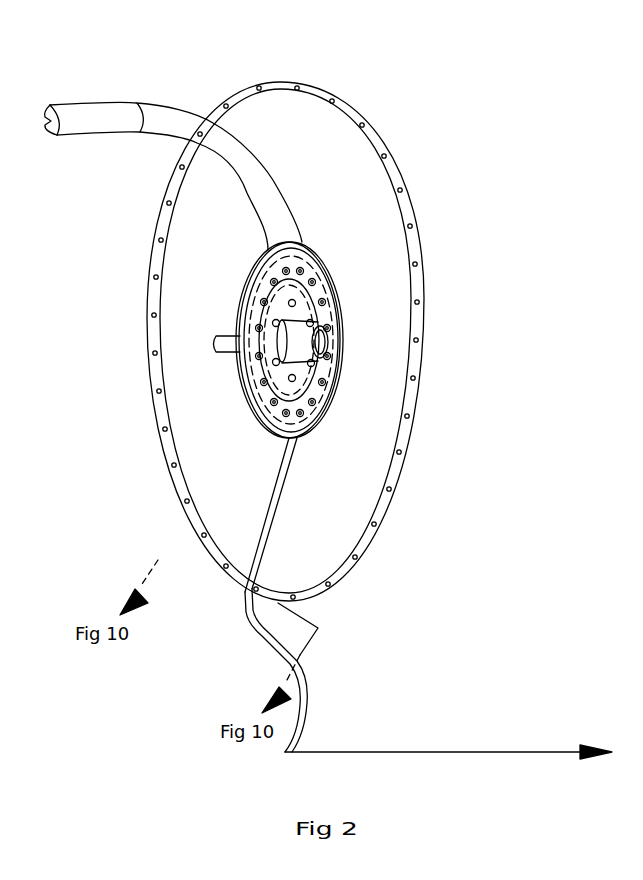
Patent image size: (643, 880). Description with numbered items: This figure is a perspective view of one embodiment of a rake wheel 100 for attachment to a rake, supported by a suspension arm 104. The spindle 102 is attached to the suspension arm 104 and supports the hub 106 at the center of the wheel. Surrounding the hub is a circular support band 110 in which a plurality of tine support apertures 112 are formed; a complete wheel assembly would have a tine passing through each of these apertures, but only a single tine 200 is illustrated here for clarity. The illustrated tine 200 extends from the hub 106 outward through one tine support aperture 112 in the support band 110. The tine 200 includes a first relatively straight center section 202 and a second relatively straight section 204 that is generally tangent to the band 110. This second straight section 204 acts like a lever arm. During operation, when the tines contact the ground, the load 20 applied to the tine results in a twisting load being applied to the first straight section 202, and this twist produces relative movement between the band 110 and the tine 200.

The wheel 100 is at (420, 96).
The spindle 102 is at (226, 340).
The suspension arm 104 is at (163, 113).
The hub 106 is at (318, 258).
The support band 110 is at (421, 299).
The tine support aperture 112 is at (175, 477).
The tine 200 is at (290, 470).
The first relatively straight center section 202 is at (270, 530).
The second relatively straight section 204 is at (280, 653).
The load vector 20 is at (448, 764).